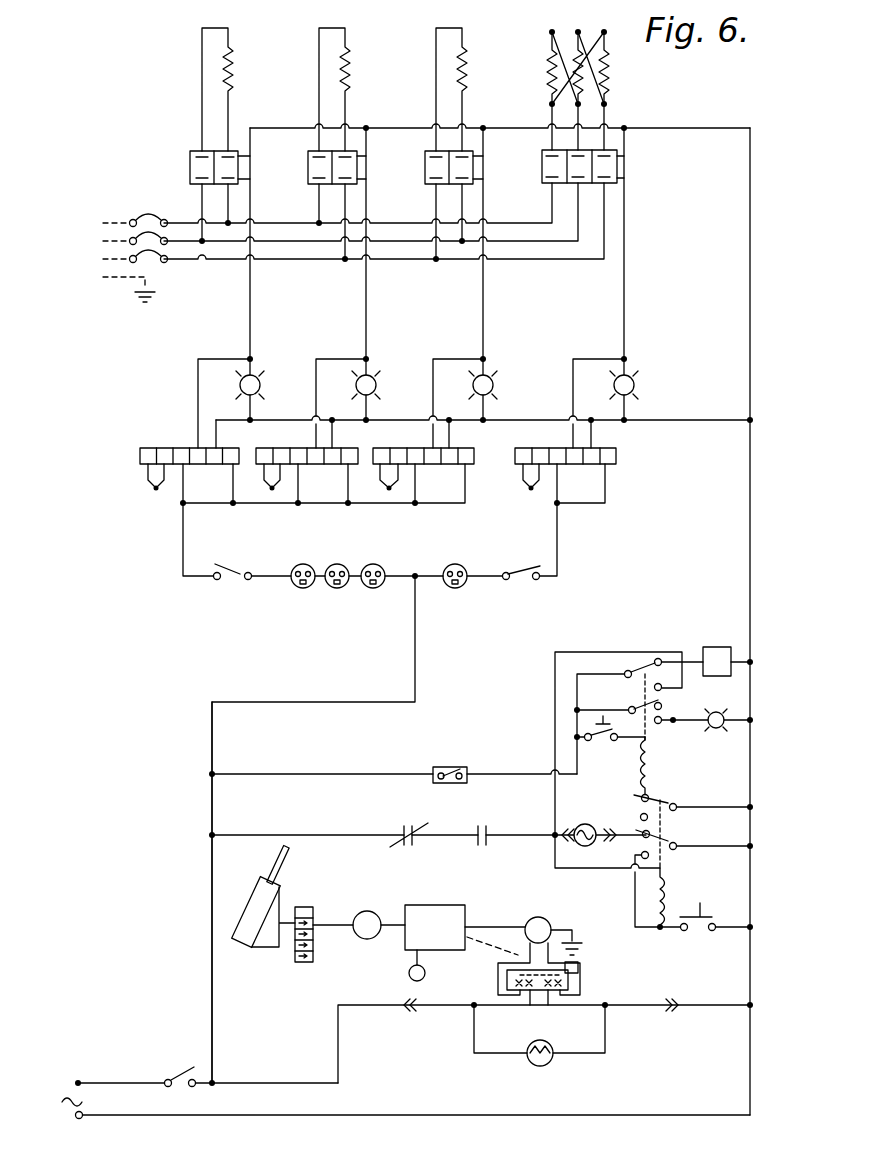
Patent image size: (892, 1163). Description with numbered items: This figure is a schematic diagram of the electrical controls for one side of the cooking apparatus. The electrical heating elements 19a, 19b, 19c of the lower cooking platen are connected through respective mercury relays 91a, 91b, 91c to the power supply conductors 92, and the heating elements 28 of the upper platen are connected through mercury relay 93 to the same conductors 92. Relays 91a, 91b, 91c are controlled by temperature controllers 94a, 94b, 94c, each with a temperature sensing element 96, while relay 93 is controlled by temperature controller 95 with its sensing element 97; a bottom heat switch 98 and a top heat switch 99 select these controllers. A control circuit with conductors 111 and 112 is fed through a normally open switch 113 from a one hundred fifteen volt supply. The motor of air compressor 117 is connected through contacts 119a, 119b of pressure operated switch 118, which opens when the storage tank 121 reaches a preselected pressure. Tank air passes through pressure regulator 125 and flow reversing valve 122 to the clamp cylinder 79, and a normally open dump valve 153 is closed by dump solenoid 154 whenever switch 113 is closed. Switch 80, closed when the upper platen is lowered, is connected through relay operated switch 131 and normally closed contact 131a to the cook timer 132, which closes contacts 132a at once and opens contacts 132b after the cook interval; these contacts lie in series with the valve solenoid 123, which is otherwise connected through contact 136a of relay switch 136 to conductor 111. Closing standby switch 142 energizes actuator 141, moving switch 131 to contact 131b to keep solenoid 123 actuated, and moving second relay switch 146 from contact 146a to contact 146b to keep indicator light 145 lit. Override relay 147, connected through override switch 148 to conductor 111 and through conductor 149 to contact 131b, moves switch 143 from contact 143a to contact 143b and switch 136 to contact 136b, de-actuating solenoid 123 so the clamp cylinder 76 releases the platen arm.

The electrical heating element 19a is at (230, 70).
The electrical heating element 19b is at (347, 70).
The electrical heating element 19c is at (464, 75).
The heating elements 28 is at (607, 67).
The mercury relay 91a is at (192, 147).
The mercury relay 91b is at (306, 150).
The mercury relay 91c is at (425, 152).
The mercury relay 93 is at (542, 183).
The power supply conductors 92 is at (214, 260).
The temperature controller 94a is at (183, 447).
The temperature controller 94b is at (293, 447).
The temperature controller 94c is at (418, 448).
The temperature controller 95 is at (608, 448).
The temperature sensing element 96 is at (158, 490).
The temperature sensing element 97 is at (532, 490).
The bottom heat switch 98 is at (232, 580).
The top heat switch 99 is at (522, 582).
The switch 80 is at (446, 768).
The control circuit conductor 112 is at (212, 927).
The cook timer contacts 132b is at (404, 828).
The cook timer contacts 132a is at (488, 828).
The solenoid 123 is at (582, 823).
The conductor 149 is at (590, 868).
The relay operated switch 131 is at (637, 670).
The relay contact 131a is at (660, 658).
The relay contact 131b is at (662, 688).
The cook timer 132 is at (718, 647).
The second relay operated switch 146 is at (632, 706).
The contact 146a is at (662, 706).
The contact 146b is at (662, 722).
The indicator light 145 is at (722, 722).
The standby switch 142 is at (590, 730).
The electroresponsive actuator 141 is at (652, 768).
The relay contact 143a is at (660, 800).
The relay operated switch 143 is at (676, 804).
The contact 143b is at (641, 817).
The relay contact 136a is at (655, 836).
The relay operated switch 136 is at (670, 850).
The contact 136b is at (641, 855).
The override relay 147 is at (668, 898).
The override switch 148 is at (712, 915).
The control circuit conductor 111 is at (752, 866).
The clamp cylinder 76 is at (245, 935).
The clamp cylinder 79 is at (280, 868).
The flow reversing valve 122 is at (313, 907).
The pressure regulator 125 is at (370, 910).
The pressurized storage tank 121 is at (437, 904).
The dump valve 153 is at (412, 979).
The air compressor 117 is at (545, 893).
The pressure operated switch 118 is at (578, 963).
The contacts 119a is at (510, 982).
The contacts 119b is at (572, 972).
The dump solenoid 154 is at (550, 1060).
The selectively operable switch 113 is at (180, 1075).